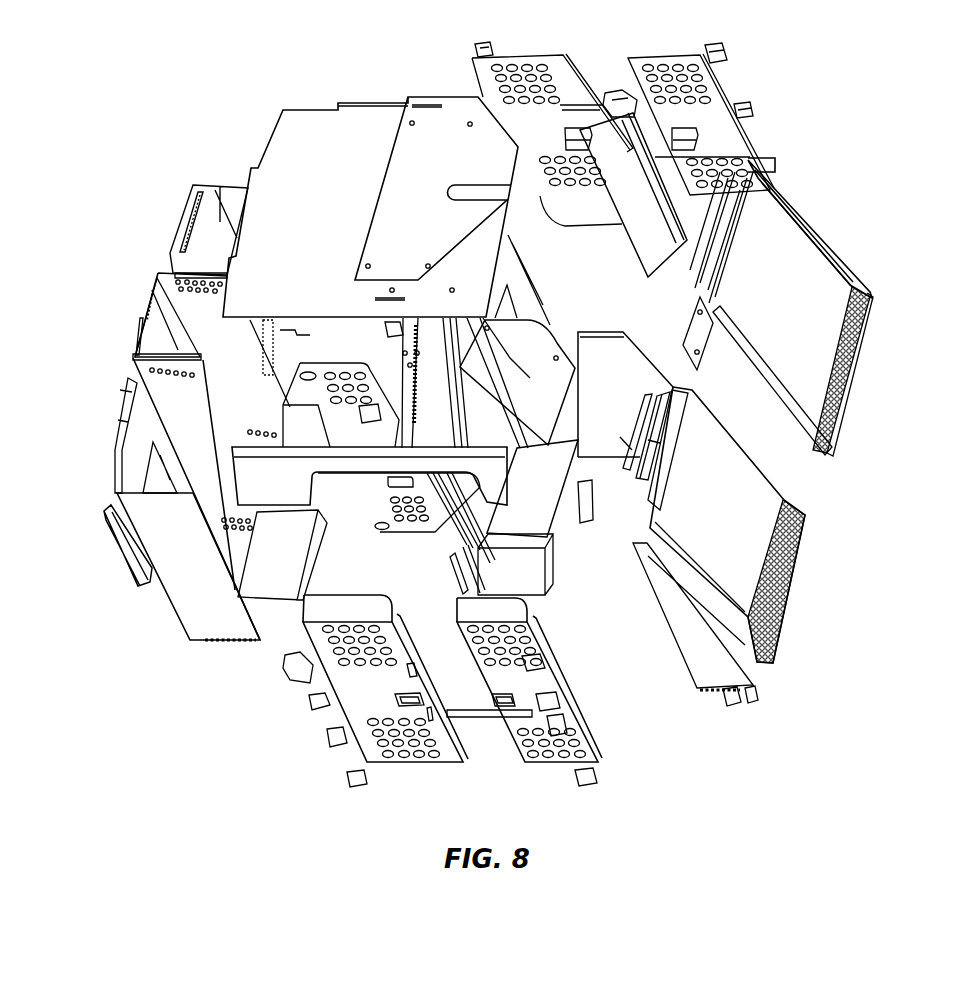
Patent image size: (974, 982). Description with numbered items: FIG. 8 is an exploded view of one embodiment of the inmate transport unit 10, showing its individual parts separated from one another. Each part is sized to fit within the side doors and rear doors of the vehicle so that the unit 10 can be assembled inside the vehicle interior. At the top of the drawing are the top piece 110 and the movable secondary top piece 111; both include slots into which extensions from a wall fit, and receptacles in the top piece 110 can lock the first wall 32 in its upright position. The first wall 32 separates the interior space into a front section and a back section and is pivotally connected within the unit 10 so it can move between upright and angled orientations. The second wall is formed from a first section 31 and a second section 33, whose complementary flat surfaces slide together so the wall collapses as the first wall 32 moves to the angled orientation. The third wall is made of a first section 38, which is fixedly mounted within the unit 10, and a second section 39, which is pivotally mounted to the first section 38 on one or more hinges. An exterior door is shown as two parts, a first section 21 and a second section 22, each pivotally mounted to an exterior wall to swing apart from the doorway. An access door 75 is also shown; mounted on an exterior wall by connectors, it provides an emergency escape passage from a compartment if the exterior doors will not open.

The unit 10 is at (841, 138).
The first section 21 is at (365, 694).
The second section 22 is at (560, 687).
The first section 31 is at (522, 369).
The first wall 32 is at (467, 355).
The second section 33 is at (633, 385).
The first section 38 is at (168, 393).
The second section 39 is at (357, 438).
The access door 75 is at (123, 557).
The top piece 110 is at (297, 162).
The secondary top piece 111 is at (428, 122).